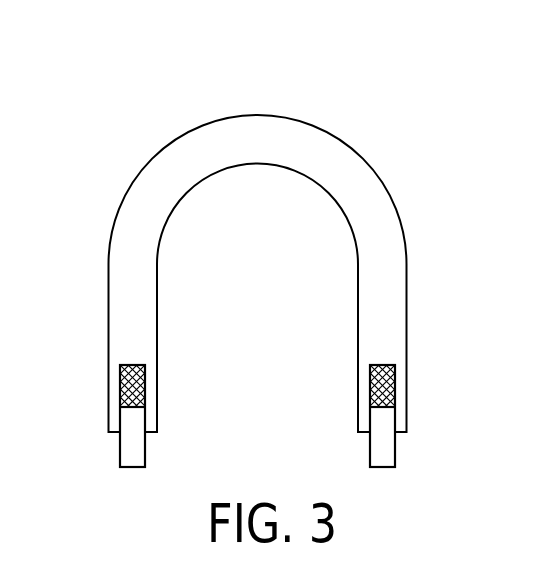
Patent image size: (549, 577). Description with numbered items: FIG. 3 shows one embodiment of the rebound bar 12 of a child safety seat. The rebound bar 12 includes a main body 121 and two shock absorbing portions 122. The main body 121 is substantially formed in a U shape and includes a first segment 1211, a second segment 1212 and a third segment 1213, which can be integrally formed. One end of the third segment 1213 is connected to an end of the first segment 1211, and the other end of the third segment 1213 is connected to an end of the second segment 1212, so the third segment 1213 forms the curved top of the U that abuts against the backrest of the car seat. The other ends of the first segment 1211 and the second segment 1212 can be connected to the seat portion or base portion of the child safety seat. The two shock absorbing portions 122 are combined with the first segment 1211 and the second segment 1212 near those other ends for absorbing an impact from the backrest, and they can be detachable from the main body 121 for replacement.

The rebound bar 12 is at (131, 62).
The main body 121 is at (338, 99).
The first segment 1211 is at (127, 292).
The second segment 1212 is at (388, 292).
The third segment 1213 is at (347, 159).
The shock absorbing portion 122 is at (120, 390).